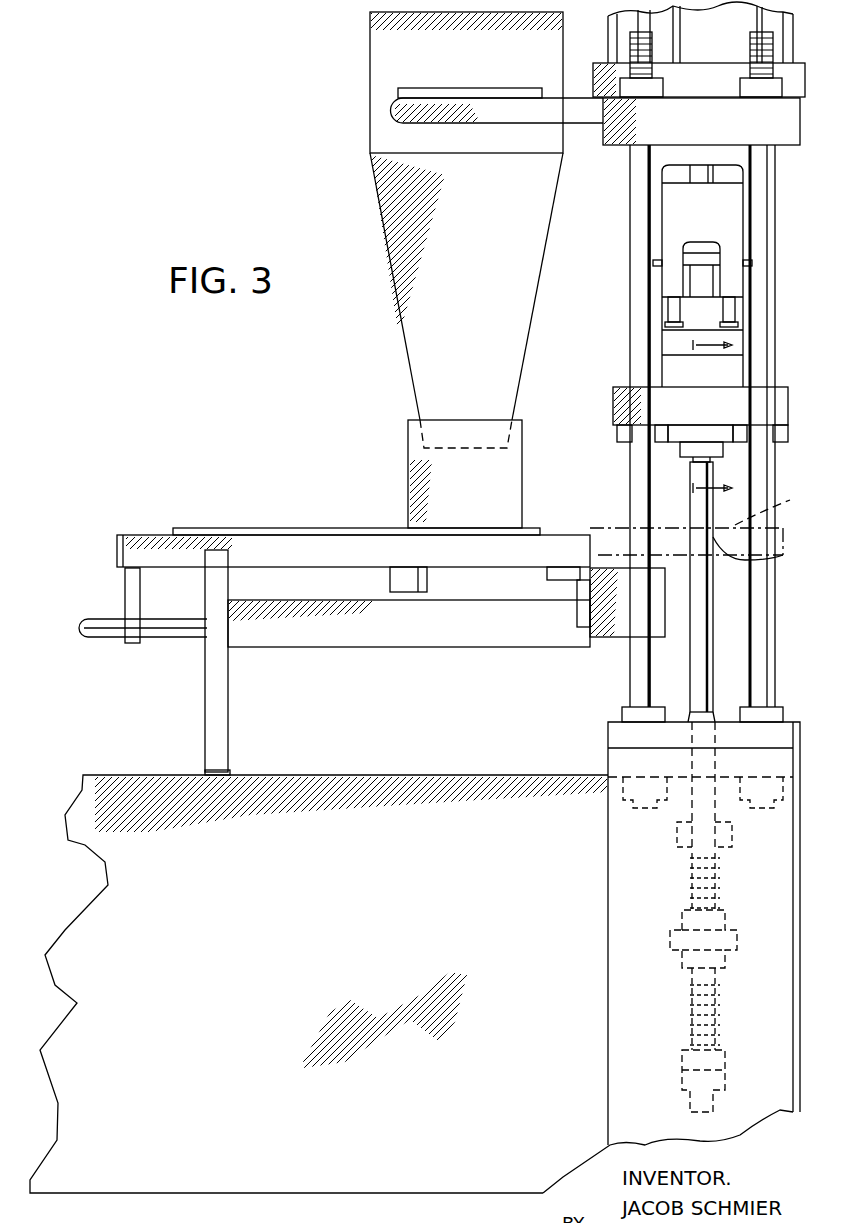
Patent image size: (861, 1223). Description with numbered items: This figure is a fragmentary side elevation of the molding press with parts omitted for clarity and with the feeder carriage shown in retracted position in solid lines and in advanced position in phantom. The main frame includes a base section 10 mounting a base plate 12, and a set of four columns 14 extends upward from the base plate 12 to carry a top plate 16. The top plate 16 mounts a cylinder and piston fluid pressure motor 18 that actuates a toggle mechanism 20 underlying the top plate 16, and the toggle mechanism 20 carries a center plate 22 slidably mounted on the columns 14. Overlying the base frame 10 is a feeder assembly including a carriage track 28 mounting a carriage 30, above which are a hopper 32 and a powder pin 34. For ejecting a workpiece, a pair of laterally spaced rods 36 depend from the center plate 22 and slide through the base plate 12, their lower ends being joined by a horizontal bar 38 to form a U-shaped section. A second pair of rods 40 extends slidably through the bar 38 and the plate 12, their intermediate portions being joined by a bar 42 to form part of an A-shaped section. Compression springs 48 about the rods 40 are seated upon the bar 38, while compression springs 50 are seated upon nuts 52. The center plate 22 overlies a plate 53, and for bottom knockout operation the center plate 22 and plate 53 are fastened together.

The base section 10 is at (410, 884).
The base plate 12 is at (612, 720).
The columns 14 is at (630, 476).
The top plate 16 is at (795, 120).
The cylinder and piston fluid pressure motor 18 is at (790, 34).
The toggle mechanism 20 is at (656, 283).
The center plate 22 is at (613, 405).
The carriage track 28 is at (319, 545).
The carriage 30 is at (250, 532).
The hopper 32 is at (495, 74).
The powder pin 34 is at (485, 492).
The rods 36 is at (704, 582).
The bar 38 is at (738, 940).
The rods 40 is at (720, 848).
The bar 42 is at (677, 832).
The compression springs 48 is at (690, 885).
The compression springs 50 is at (720, 990).
The nuts 52 is at (728, 1052).
The plate 53 is at (713, 433).